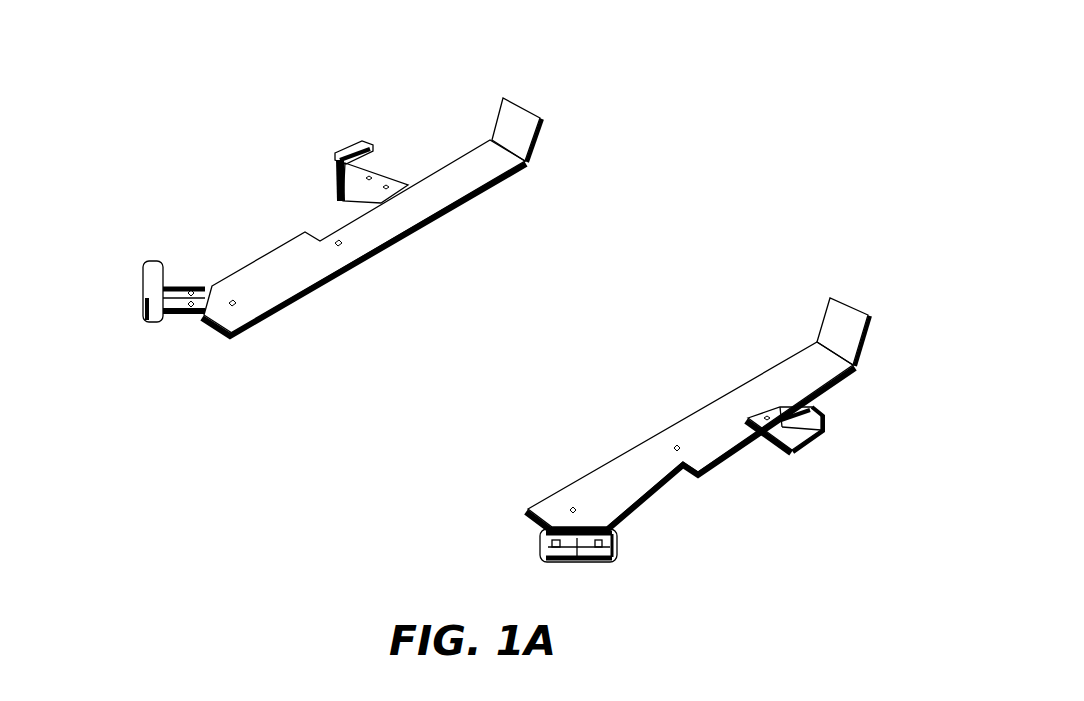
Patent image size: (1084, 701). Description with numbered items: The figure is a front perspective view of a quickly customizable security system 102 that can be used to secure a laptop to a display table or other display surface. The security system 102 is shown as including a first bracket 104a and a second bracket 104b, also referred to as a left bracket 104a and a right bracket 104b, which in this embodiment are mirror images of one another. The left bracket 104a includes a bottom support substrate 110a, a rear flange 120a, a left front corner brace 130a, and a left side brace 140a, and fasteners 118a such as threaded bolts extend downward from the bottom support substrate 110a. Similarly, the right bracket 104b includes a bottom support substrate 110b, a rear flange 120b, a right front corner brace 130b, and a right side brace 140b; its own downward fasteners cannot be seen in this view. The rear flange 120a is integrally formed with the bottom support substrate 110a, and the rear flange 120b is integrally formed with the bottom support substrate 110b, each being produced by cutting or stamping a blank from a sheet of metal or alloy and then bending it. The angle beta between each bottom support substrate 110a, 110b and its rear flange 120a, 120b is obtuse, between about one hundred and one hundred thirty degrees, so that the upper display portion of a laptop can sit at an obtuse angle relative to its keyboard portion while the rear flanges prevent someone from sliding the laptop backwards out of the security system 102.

The quickly customizable security system 102 is at (767, 162).
The first bracket 104a is at (214, 82).
The second bracket 104b is at (869, 561).
The bottom support substrate 110a is at (448, 175).
The bottom support substrate 110b is at (772, 390).
The fasteners 118a is at (232, 334).
The rear flange 120a is at (516, 111).
The rear flange 120b is at (842, 306).
The left front corner brace 130a is at (131, 272).
The right front corner brace 130b is at (575, 571).
The left side brace 140a is at (316, 161).
The right side brace 140b is at (800, 459).